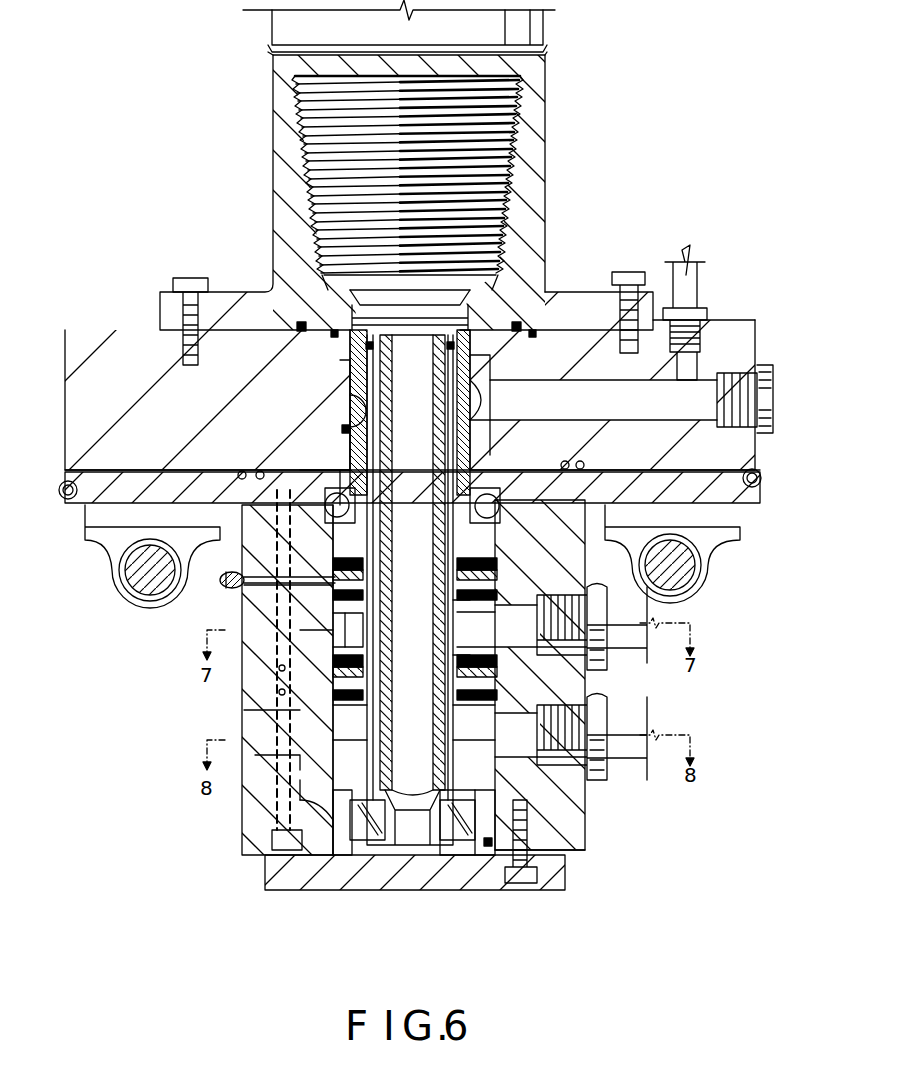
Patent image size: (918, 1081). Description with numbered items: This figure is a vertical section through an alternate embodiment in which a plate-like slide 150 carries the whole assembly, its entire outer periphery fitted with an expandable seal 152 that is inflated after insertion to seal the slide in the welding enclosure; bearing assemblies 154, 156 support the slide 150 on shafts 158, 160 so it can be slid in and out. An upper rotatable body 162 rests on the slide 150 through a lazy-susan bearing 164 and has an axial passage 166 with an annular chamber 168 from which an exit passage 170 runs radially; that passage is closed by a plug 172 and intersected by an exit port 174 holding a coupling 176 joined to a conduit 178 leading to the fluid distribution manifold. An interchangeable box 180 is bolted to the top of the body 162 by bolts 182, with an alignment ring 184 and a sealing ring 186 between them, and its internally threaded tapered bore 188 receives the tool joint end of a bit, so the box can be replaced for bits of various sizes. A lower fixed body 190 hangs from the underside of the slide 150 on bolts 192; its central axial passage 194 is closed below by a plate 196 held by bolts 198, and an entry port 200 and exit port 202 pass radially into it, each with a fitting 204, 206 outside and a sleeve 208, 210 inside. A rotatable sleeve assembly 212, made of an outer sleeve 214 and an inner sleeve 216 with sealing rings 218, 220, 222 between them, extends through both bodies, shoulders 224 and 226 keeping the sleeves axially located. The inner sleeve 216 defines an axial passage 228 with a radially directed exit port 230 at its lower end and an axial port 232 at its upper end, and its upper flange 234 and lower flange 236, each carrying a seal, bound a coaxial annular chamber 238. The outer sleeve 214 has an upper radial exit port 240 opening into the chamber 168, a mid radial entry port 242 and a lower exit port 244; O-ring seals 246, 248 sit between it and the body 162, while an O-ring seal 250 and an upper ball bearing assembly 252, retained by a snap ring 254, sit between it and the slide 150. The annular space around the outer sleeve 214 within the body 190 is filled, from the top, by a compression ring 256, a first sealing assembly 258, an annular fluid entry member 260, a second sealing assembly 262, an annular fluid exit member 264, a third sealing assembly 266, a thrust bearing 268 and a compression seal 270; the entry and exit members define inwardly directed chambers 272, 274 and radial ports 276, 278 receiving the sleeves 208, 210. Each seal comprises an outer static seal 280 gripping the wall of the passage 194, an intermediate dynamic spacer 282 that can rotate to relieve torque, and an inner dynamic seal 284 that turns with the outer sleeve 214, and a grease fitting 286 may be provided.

The plate-like slide 150 is at (85, 505).
The expandable seal 152 is at (762, 485).
The bearing assembly 154 is at (130, 595).
The bearing assembly 156 is at (680, 598).
The shaft 158 is at (160, 600).
The shaft 160 is at (690, 578).
The upper rotatable body 162 is at (120, 330).
The lazy-susan bearing 164 is at (250, 470).
The axial passage 166 is at (352, 380).
The annular chamber 168 is at (350, 430).
The exit passage 170 is at (610, 412).
The plug 172 is at (770, 372).
The exit port 174 is at (612, 381).
The coupling 176 is at (700, 330).
The conduit 178 is at (672, 268).
The interchangeable box 180 is at (273, 157).
The bolts 182 is at (190, 278).
The alignment ring 184 is at (285, 337).
The sealing ring 186 is at (352, 330).
The internally threaded tapered bore 188 is at (305, 130).
The lower fixed body 190 is at (242, 698).
The bolts 192 is at (275, 848).
The central axial passage 194 is at (272, 769).
The plate 196 is at (275, 882).
The bolts 198 is at (520, 885).
The entry port 200 is at (580, 575).
The exit port 202 is at (585, 812).
The fitting 204 is at (605, 655).
The fitting 206 is at (605, 765).
The sleeve 208 is at (512, 610).
The sleeve 210 is at (535, 719).
The rotatable sleeve assembly 212 is at (462, 850).
The outer sleeve 214 is at (412, 562).
The inner sleeve 216 is at (427, 493).
The sealing ring 218 is at (393, 348).
The sealing ring 220 is at (414, 719).
The sealing ring 222 is at (400, 850).
The shoulder 224 is at (272, 792).
The shoulder 226 is at (445, 850).
The axial passage 228 is at (412, 565).
The radially directed exit port 230 is at (527, 829).
The axial port 232 is at (352, 300).
The upper flange 234 is at (355, 412).
The lower flange 236 is at (401, 633).
The coaxial annular chamber 238 is at (383, 574).
The upper radial exit port 240 is at (490, 404).
The mid radial entry port 242 is at (500, 671).
The lower exit port 244 is at (503, 815).
The O-ring seal 246 is at (485, 370).
The O-ring seal 248 is at (490, 442).
The O-ring seal 250 is at (345, 432).
The upper ball bearing assembly 252 is at (250, 467).
The snap ring 254 is at (412, 527).
The compression ring 256 is at (500, 525).
The first sealing assembly 258 is at (415, 585).
The annular fluid entry member 260 is at (389, 630).
The second sealing assembly 262 is at (383, 677).
The annular fluid exit member 264 is at (272, 715).
The third sealing assembly 266 is at (314, 808).
The thrust bearing 268 is at (355, 855).
The compression seal 270 is at (372, 845).
The inwardly directed chamber 272 is at (288, 600).
The inwardly directed chamber 274 is at (242, 727).
The radial port 276 is at (491, 631).
The radial port 278 is at (511, 742).
The outer static seal 280 is at (264, 671).
The intermediate dynamic spacer 282 is at (264, 693).
The inner dynamic seal 284 is at (307, 645).
The grease fitting 286 is at (232, 585).